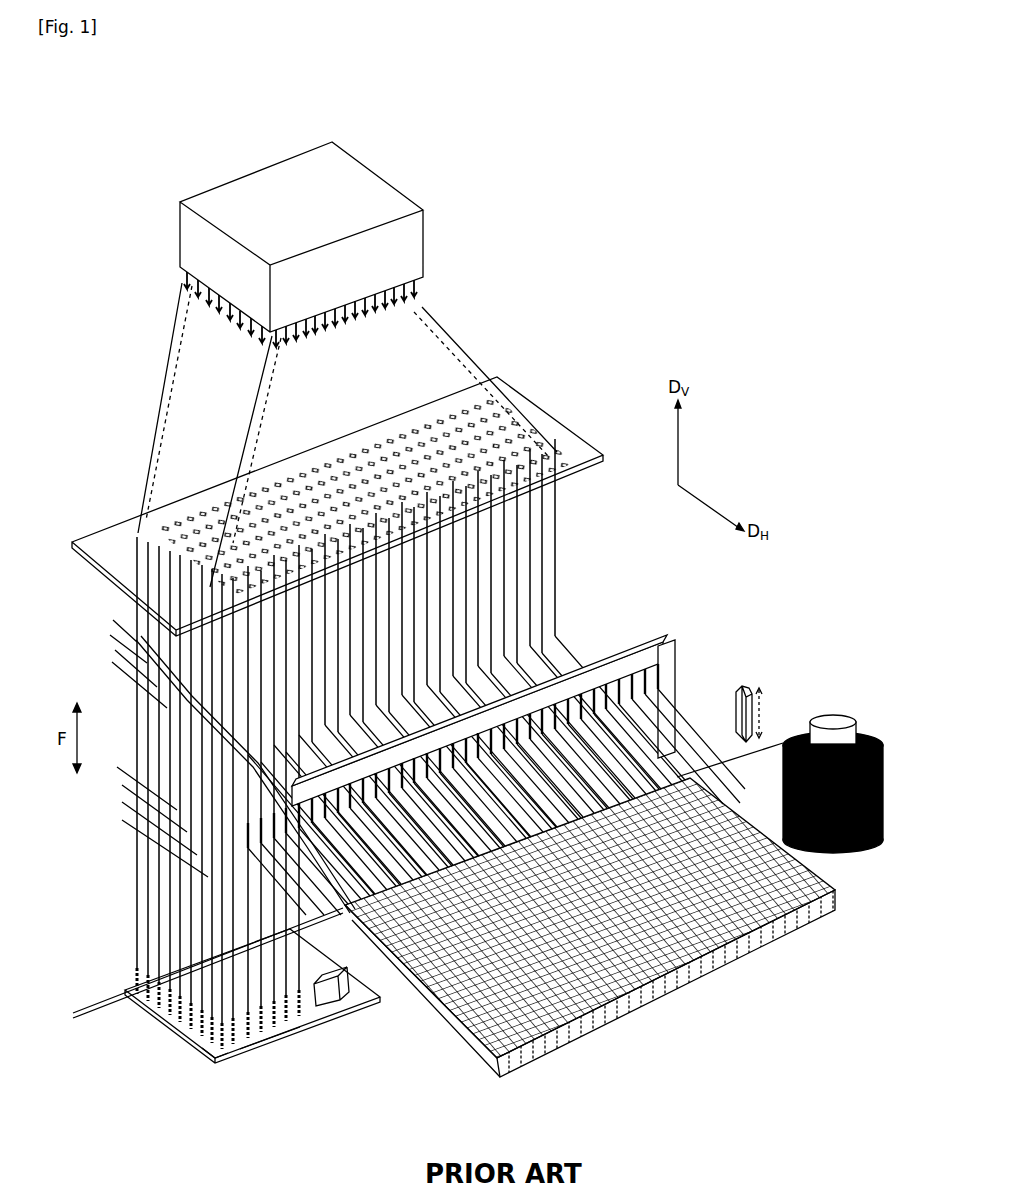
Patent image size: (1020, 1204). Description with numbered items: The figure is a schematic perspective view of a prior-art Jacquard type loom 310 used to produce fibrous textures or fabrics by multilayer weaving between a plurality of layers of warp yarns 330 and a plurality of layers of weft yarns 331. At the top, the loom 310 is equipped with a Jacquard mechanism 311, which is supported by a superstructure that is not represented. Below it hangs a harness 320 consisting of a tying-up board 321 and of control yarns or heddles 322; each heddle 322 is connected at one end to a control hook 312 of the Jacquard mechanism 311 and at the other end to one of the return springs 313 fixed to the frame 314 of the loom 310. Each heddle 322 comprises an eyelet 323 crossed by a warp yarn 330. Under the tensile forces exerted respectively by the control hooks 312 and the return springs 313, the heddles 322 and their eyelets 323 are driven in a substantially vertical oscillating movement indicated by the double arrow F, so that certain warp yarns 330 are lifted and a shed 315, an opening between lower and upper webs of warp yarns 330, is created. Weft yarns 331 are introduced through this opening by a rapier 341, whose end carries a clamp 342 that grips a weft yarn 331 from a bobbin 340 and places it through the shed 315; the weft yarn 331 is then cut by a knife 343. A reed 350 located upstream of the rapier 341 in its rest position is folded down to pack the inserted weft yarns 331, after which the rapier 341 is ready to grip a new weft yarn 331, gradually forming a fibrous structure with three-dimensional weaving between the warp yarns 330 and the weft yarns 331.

The Jacquard type loom 310 is at (553, 205).
The Jacquard mechanism 311 is at (365, 180).
The control hook 312 is at (204, 297).
The return spring 313 is at (163, 1020).
The frame 314 is at (197, 1053).
The shed 315 is at (257, 1047).
The harness 320 is at (337, 462).
The tying-up board 321 is at (337, 495).
The heddle 322 is at (243, 448).
The eyelet 323 is at (167, 708).
The warp yarns 330 is at (112, 662).
The weft yarns 331 is at (721, 762).
The bobbin 340 is at (858, 847).
The rapier 341 is at (105, 1000).
The clamp 342 is at (340, 1003).
The knife 343 is at (740, 688).
The reed 350 is at (628, 668).